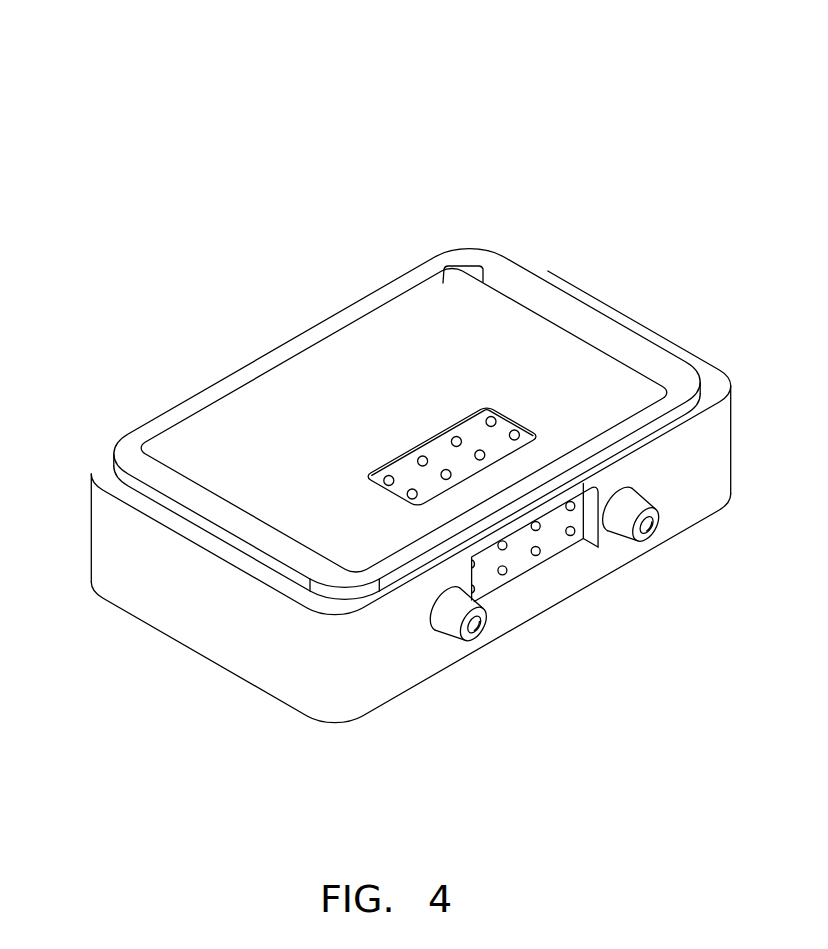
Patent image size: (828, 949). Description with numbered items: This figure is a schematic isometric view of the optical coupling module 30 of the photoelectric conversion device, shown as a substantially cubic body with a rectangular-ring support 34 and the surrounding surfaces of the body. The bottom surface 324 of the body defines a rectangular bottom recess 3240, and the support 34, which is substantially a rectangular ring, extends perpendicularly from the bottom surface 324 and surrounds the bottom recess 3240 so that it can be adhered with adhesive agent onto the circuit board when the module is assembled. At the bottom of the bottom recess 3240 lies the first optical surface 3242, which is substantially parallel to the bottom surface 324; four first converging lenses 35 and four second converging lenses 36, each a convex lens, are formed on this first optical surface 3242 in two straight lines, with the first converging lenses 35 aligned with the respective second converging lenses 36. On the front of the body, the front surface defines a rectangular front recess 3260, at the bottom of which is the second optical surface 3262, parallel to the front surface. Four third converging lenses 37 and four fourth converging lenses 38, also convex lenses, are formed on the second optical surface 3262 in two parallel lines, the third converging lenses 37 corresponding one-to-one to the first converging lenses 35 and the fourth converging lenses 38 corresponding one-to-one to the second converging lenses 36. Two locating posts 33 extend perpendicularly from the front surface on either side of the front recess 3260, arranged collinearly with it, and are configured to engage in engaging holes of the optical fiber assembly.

The optical coupling module 30 is at (415, 80).
The bottom surface 324 is at (101, 472).
The support 34 is at (510, 268).
The first converging lenses 35 is at (493, 413).
The second converging lenses 36 is at (517, 427).
The bottom recess 3240 is at (393, 460).
The first optical surface 3242 is at (440, 453).
The third converging lenses 37 is at (600, 520).
The fourth converging lenses 38 is at (573, 536).
The front recess 3260 is at (490, 610).
The second optical surface 3262 is at (517, 558).
The locating posts 33 is at (467, 630).